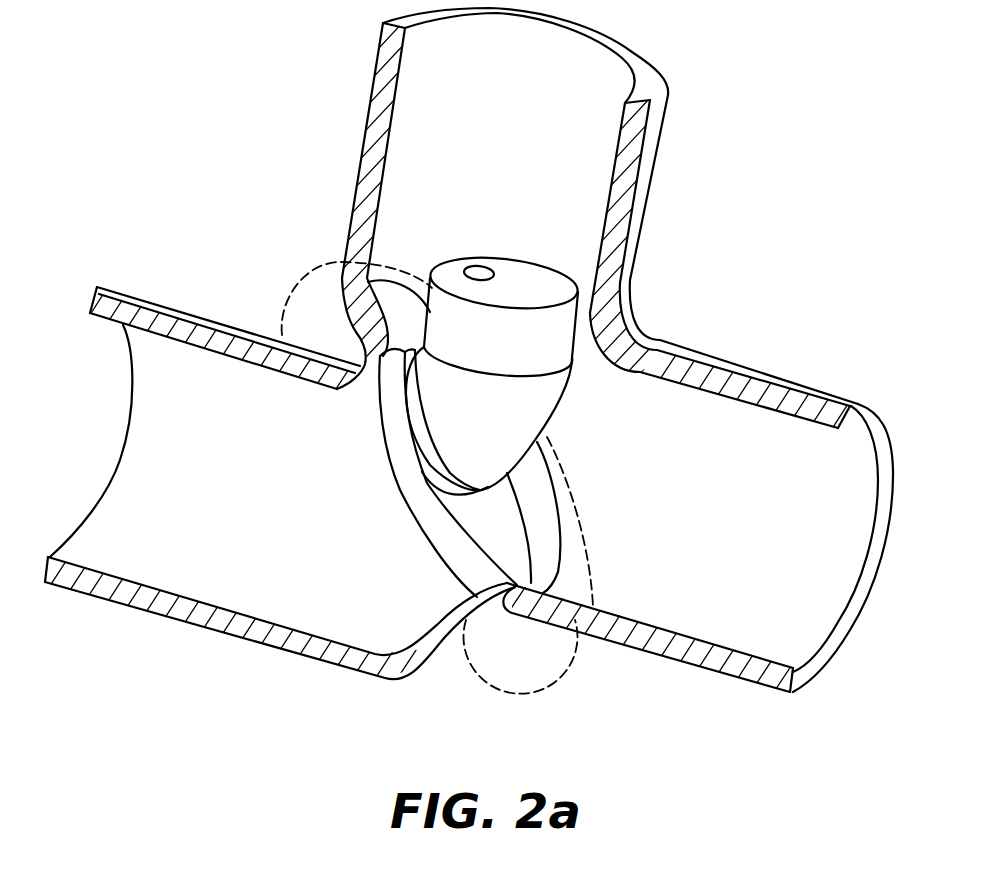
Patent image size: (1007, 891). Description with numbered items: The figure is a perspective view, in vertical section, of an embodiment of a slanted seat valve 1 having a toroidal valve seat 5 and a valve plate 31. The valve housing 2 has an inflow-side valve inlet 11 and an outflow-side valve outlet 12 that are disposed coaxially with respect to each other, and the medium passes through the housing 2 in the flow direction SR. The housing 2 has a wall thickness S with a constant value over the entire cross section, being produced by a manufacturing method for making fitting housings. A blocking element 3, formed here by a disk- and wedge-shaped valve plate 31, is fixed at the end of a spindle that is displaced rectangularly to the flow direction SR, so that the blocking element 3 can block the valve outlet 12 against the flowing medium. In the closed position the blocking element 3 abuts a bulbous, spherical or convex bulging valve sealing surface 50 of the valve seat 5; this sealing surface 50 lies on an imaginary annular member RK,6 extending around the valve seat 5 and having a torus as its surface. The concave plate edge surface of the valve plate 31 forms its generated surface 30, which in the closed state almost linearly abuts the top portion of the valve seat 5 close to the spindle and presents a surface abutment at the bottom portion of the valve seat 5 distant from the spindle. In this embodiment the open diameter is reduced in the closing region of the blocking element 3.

The slanted seat valve 1 is at (249, 23).
The valve housing 2 is at (637, 213).
The blocking element 3 is at (548, 345).
The valve seat 5 is at (338, 368).
The valve sealing surface 50 is at (377, 349).
The valve inlet 11 is at (120, 503).
The valve outlet 12 is at (833, 598).
The generated surface 30 is at (443, 563).
The valve plate 31 is at (463, 518).
The wall thickness S is at (802, 447).
The flow direction SR is at (205, 465).
The annular member with torus RK,6 is at (520, 700).